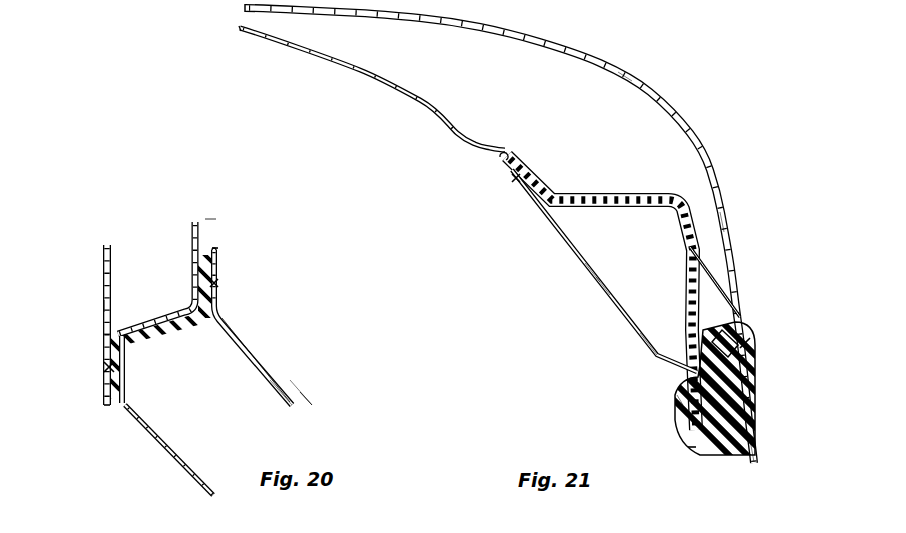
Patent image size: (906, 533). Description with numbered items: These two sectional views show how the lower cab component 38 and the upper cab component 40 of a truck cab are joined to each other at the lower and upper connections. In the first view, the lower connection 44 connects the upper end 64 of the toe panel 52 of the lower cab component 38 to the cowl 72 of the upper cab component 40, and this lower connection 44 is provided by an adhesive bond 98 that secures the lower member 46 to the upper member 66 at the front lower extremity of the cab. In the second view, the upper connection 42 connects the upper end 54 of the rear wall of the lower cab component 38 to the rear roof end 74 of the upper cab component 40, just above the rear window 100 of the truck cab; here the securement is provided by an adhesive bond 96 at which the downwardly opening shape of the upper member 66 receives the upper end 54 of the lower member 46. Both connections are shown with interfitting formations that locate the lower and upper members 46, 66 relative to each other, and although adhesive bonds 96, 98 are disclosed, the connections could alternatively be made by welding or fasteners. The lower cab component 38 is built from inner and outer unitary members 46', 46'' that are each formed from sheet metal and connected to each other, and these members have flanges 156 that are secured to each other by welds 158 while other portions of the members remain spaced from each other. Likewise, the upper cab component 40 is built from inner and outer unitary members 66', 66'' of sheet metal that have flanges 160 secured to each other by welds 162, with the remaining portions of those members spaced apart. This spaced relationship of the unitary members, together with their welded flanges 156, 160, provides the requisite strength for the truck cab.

In FIG. 20, the lower cab component 38 is at (318, 433).
In FIG. 21, the lower cab component 38 is at (590, 304).
In FIG. 20, the upper cab component 40 is at (214, 217).
In FIG. 21, the upper cab component 40 is at (240, 12).
In FIG. 21, the upper connection 42 is at (627, 196).
In FIG. 20, the lower connection 44 is at (106, 338).
In FIG. 20, the lower member 46 is at (340, 405).
In FIG. 21, the lower member 46 is at (612, 362).
In FIG. 20, the inner unitary member 46' is at (302, 380).
In FIG. 21, the inner unitary member 46' is at (604, 271).
In FIG. 20, the outer unitary member 46'' is at (169, 456).
In FIG. 21, the outer unitary member 46'' is at (747, 278).
In FIG. 20, the toe panel 52 is at (311, 402).
In FIG. 21, the upper end 54 is at (745, 326).
In FIG. 20, the upper end 64 is at (230, 331).
In FIG. 20, the upper member 66 is at (166, 251).
In FIG. 21, the upper member 66 is at (499, 231).
In FIG. 20, the inner unitary member 66' is at (246, 307).
In FIG. 21, the inner unitary member 66' is at (372, 101).
In FIG. 20, the outer unitary member 66'' is at (84, 312).
In FIG. 21, the outer unitary member 66'' is at (659, 51).
In FIG. 20, the cowl 72 is at (103, 306).
In FIG. 21, the rear roof end 74 is at (730, 210).
In FIG. 21, the adhesive bond 96 is at (591, 213).
In FIG. 20, the adhesive bond 98 is at (165, 348).
In FIG. 21, the rear window 100 is at (758, 455).
In FIG. 20, the flanges 156 is at (220, 250).
In FIG. 21, the flanges 156 is at (694, 448).
In FIG. 20, the welds 158 is at (216, 283).
In FIG. 21, the welds 158 is at (680, 401).
In FIG. 20, the flanges 160 is at (117, 408).
In FIG. 21, the flanges 160 is at (745, 337).
In FIG. 20, the welds 162 is at (108, 372).
In FIG. 21, the welds 162 is at (750, 349).